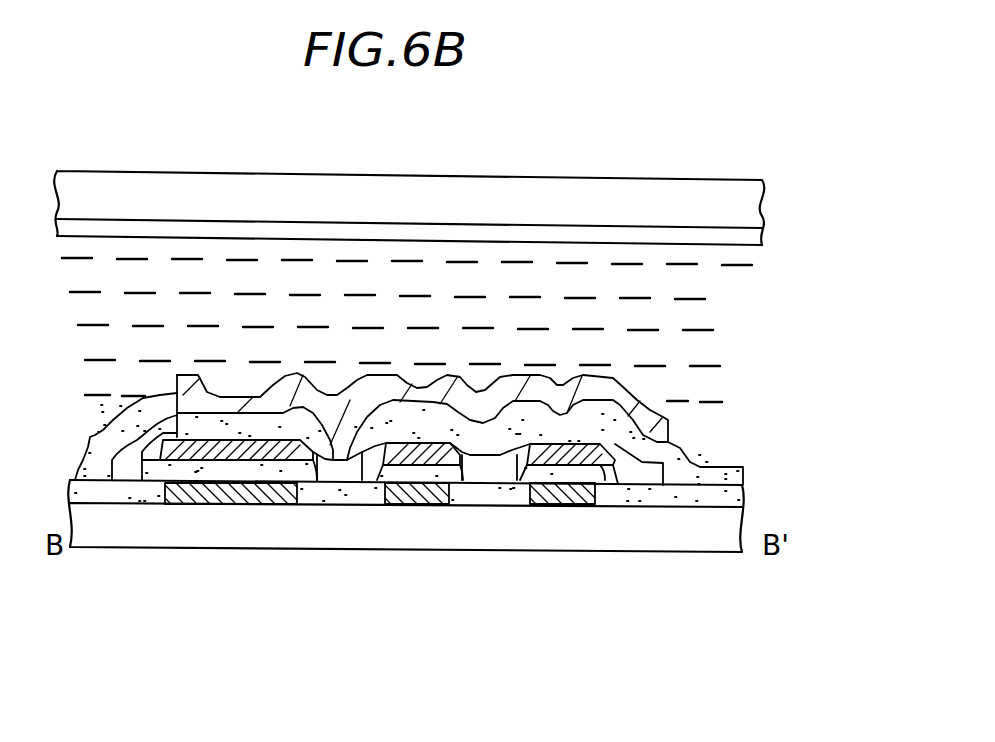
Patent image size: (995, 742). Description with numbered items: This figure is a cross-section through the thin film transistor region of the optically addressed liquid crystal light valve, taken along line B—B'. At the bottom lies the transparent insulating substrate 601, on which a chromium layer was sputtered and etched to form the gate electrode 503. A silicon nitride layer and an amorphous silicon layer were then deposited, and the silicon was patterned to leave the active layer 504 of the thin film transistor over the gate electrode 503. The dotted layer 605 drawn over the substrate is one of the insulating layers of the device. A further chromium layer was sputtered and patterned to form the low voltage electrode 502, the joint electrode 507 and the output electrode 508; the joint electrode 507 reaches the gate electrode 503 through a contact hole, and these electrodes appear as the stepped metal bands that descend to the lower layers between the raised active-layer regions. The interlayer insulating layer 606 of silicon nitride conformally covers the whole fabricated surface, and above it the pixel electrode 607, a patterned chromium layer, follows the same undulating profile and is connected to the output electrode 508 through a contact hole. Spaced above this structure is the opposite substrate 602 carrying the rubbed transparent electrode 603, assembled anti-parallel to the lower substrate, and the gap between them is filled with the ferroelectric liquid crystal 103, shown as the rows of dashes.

The opposite substrate 602 is at (700, 200).
The transparent electrode 603 is at (748, 238).
The ferroelectric liquid crystal 103 is at (733, 333).
The insulating layer 605 is at (730, 497).
The interlayer insulating layer 606 is at (727, 475).
The pixel electrode 607 is at (660, 428).
The transparent insulating substrate 601 is at (130, 467).
The gate electrode 503 is at (203, 505).
The active layer 504 is at (322, 470).
The output electrode 508 is at (350, 473).
The joint electrode 507 is at (490, 473).
The low voltage electrode 502 is at (640, 473).